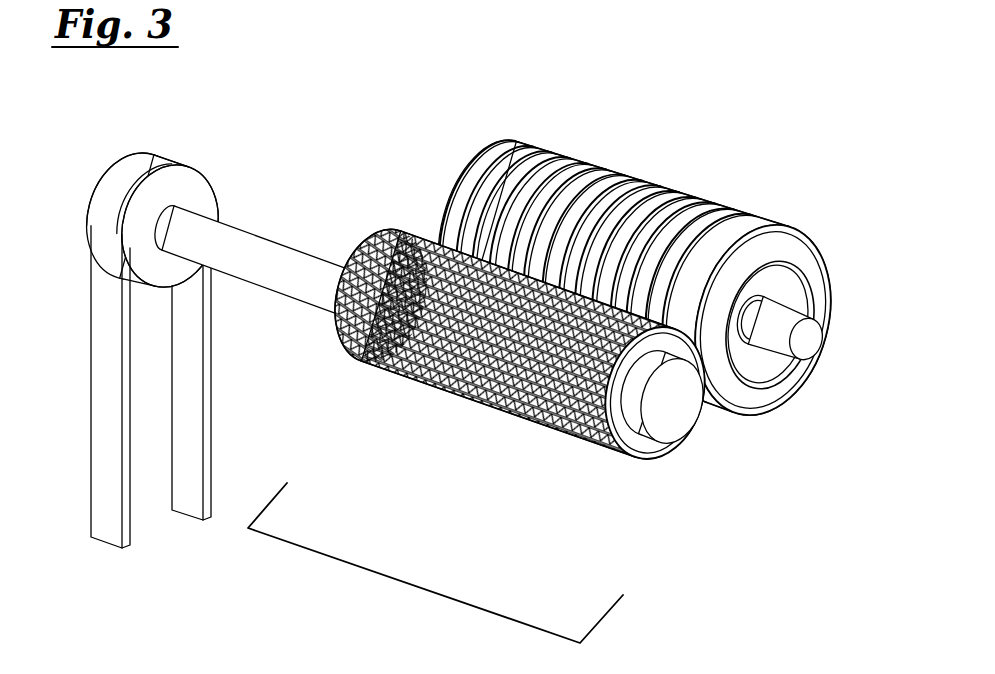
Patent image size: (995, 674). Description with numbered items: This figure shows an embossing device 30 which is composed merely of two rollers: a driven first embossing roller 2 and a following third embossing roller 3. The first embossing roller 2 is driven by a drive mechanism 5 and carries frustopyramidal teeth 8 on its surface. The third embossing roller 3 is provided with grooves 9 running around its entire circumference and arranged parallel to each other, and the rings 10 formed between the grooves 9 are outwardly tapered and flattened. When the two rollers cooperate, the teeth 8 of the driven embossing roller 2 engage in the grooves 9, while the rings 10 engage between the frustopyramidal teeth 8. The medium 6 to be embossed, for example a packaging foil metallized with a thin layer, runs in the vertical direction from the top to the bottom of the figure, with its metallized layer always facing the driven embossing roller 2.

The first embossing roller 2 is at (520, 380).
The third embossing roller 3 is at (635, 234).
The drive mechanism 5 is at (147, 163).
The medium to be embossed 6 is at (478, 237).
The teeth 8 is at (463, 407).
The grooves 9 is at (755, 217).
The rings 10 is at (705, 198).
The device 30 is at (413, 587).